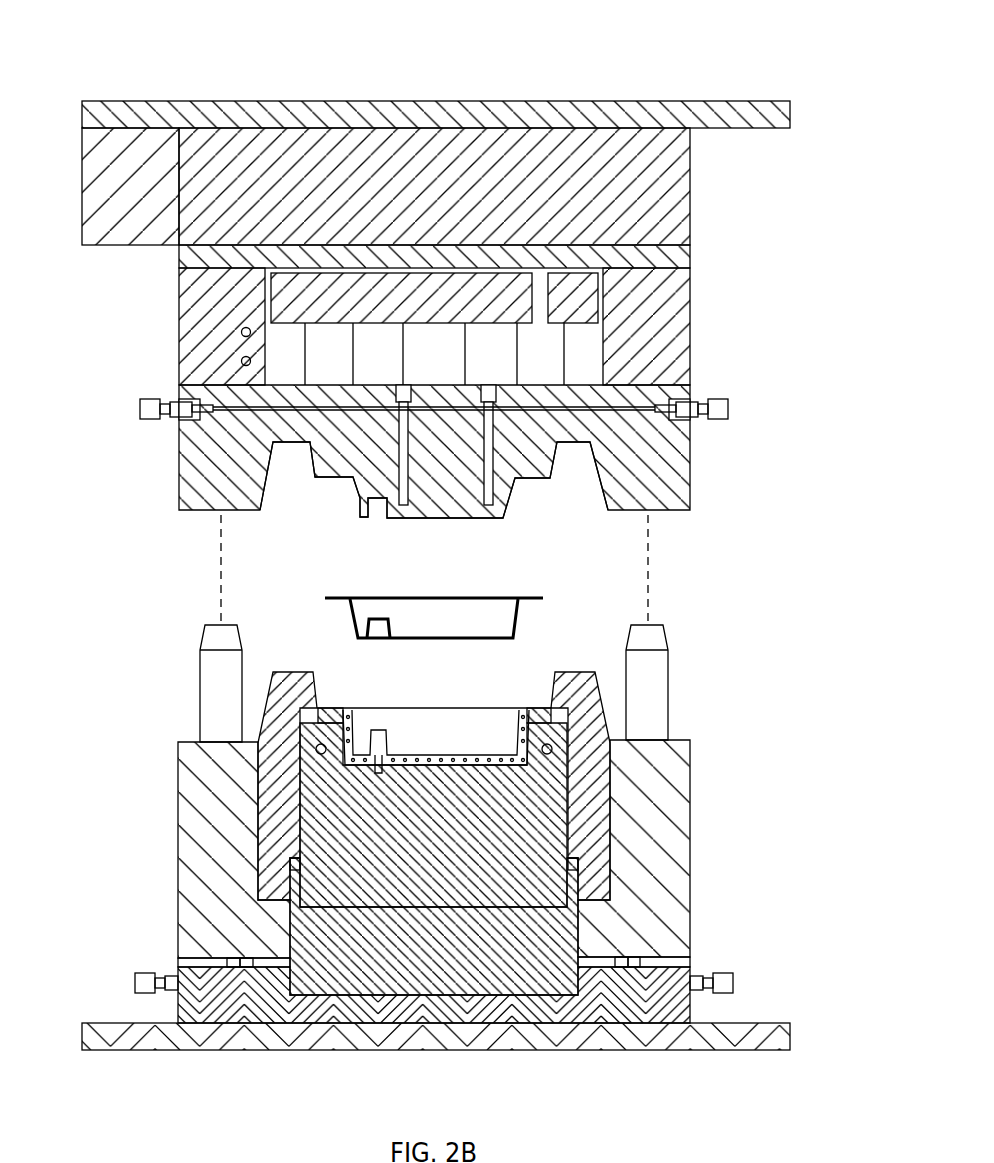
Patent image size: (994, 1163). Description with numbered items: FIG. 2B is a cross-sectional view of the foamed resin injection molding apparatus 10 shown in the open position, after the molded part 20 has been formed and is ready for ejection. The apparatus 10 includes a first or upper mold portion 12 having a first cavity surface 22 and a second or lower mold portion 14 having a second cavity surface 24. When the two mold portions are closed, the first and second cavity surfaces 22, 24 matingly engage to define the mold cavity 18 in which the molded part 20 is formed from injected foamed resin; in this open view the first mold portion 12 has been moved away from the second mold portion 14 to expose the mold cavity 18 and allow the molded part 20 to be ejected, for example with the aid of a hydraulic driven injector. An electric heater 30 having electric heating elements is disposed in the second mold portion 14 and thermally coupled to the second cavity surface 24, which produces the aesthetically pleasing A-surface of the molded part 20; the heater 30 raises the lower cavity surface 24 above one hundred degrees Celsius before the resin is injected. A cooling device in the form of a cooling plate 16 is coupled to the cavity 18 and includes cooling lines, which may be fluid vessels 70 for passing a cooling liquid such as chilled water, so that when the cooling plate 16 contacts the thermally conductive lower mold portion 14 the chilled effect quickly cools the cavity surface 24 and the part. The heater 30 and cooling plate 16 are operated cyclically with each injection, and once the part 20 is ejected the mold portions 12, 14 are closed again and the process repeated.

The foamed resin injection molding apparatus 10 is at (553, 72).
The first mold portion 12 is at (178, 476).
The second mold portion 14 is at (277, 705).
The cooling device 16 is at (318, 830).
The mold cavity 18 is at (458, 735).
The molded part 20 is at (548, 598).
The first cavity surface 22 is at (473, 518).
The second cavity surface 24 is at (452, 745).
The electric heater 30 is at (406, 752).
The fluid vessels 70 is at (241, 361).